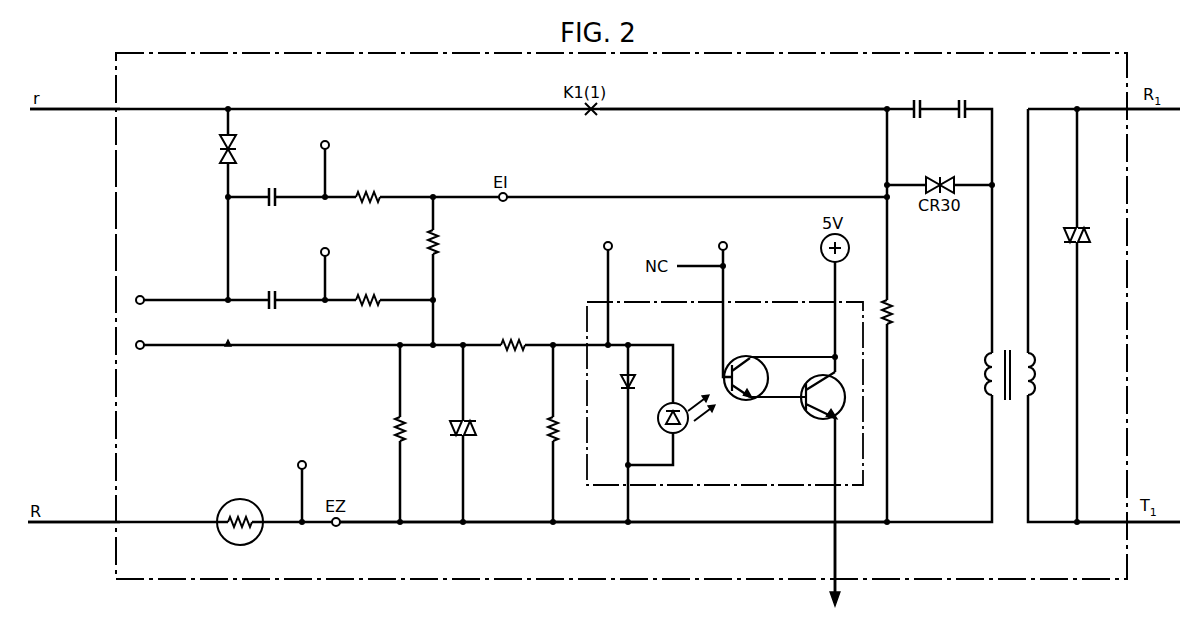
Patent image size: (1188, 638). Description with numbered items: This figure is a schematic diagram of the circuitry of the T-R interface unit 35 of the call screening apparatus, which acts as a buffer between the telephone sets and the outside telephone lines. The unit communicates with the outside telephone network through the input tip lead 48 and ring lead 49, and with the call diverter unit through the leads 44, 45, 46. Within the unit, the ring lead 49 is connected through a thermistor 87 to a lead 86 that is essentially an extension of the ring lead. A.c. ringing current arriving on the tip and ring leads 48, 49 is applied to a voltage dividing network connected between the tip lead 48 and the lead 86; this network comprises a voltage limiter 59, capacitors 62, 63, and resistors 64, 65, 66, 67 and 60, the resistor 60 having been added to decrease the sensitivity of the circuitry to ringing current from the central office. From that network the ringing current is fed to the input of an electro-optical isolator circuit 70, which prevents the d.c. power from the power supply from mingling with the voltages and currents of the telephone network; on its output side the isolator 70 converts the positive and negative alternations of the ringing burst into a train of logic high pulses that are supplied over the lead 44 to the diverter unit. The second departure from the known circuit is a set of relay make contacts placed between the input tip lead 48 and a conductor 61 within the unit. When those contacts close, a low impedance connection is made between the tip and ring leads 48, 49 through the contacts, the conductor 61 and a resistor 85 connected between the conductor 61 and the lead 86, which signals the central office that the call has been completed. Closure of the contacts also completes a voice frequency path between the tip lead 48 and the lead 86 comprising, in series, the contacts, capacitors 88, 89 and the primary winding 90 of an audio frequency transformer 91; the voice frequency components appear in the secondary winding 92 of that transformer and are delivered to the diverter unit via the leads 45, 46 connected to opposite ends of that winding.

The T-R interface unit 35 is at (138, 216).
The lead 44 is at (836, 588).
The lead 45 is at (1106, 108).
The lead 46 is at (1098, 524).
The tip lead 48 is at (80, 108).
The ring lead 49 is at (72, 524).
The voltage limiter 59 is at (213, 149).
The resistor 60 is at (538, 429).
The conductor 61 is at (693, 112).
The capacitor 62 is at (268, 188).
The capacitor 63 is at (268, 290).
The resistor 64 is at (368, 186).
The resistor 65 is at (368, 288).
The resistor 66 is at (445, 242).
The resistor 67 is at (513, 334).
The electro-optical isolator circuit 70 is at (735, 450).
The resistor 85 is at (900, 312).
The lead 86 is at (510, 525).
The thermistor 87 is at (240, 511).
The capacitor 88 is at (915, 97).
The capacitor 89 is at (960, 97).
The primary winding 90 is at (975, 374).
The audio frequency transformer 91 is at (1006, 364).
The secondary winding 92 is at (1048, 374).